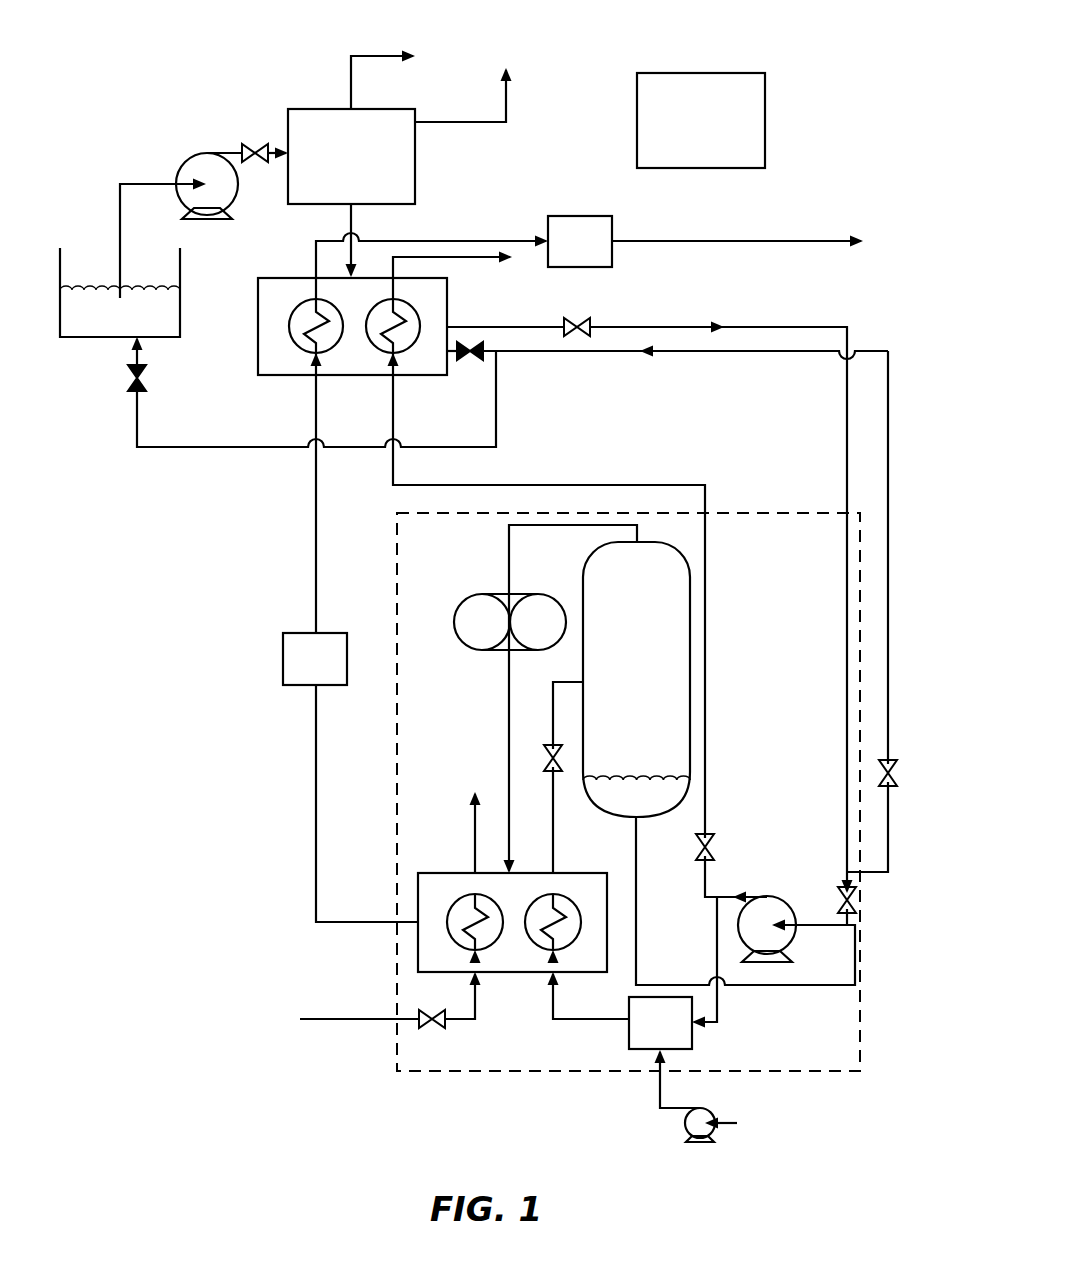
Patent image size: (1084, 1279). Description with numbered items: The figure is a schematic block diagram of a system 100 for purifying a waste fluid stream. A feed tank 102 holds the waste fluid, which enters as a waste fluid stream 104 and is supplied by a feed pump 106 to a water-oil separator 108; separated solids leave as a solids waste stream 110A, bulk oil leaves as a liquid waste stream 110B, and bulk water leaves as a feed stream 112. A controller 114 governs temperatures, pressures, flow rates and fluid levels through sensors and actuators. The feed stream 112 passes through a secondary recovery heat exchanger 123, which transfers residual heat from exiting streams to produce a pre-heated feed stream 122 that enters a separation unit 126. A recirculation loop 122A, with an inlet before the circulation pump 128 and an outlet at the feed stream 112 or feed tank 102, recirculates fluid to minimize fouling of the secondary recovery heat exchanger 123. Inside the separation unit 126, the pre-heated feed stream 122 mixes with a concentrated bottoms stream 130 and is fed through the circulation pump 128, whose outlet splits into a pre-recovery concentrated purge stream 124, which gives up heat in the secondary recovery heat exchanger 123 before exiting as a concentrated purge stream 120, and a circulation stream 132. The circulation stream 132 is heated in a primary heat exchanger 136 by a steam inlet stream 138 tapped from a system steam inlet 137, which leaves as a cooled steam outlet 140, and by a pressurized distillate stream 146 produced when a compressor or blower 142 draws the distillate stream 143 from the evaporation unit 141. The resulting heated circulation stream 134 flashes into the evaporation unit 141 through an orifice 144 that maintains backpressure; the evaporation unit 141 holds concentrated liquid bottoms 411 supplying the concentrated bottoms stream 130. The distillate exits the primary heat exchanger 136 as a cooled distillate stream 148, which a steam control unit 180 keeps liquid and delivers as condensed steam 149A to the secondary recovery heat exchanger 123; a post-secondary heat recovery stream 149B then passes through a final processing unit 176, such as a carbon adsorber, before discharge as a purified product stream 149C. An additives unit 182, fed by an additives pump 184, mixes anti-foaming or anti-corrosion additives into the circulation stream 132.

The system 100 is at (124, 70).
The feed tank 102 is at (120, 292).
The waste fluid stream 104 is at (119, 186).
The feed pump 106 is at (207, 152).
The water-oil separator 108 is at (351, 156).
The solids waste stream 110A is at (349, 60).
The liquid waste stream 110B is at (504, 98).
The feed stream 112 is at (349, 228).
The controller 114 is at (701, 120).
The concentrated purge stream 120 is at (488, 259).
The pre-heated feed stream 122 is at (845, 326).
The recirculation loop 122A is at (684, 353).
The secondary recovery heat exchanger 123 is at (430, 377).
The pre-recovery concentrated purge stream 124 is at (584, 484).
The separation unit 126 is at (771, 512).
The circulation pump 128 is at (770, 896).
The concentrated bottoms stream 130 is at (637, 920).
The circulation stream 132 is at (577, 1022).
The heated circulation stream 134 is at (554, 843).
The primary heat exchanger 136 is at (510, 973).
The system steam inlet 137 is at (352, 1020).
The steam inlet stream 138 is at (467, 1022).
The cooled steam outlet 140 is at (474, 827).
The evaporation unit 141 is at (636, 679).
The compressor or blower 142 is at (538, 594).
The distillate stream 143 is at (508, 549).
The orifice 144 is at (552, 745).
The pressurized distillate stream 146 is at (508, 758).
The cooled distillate stream 148 is at (315, 795).
The condensed steam 149A is at (315, 497).
The post-secondary heat recovery stream 149B is at (472, 240).
The purified product stream 149C is at (826, 240).
The final processing unit 176 is at (580, 241).
The steam control unit 180 is at (315, 659).
The additives unit 182 is at (660, 1023).
The additives pump 184 is at (737, 1123).
The concentrated liquid bottoms 411 is at (670, 794).